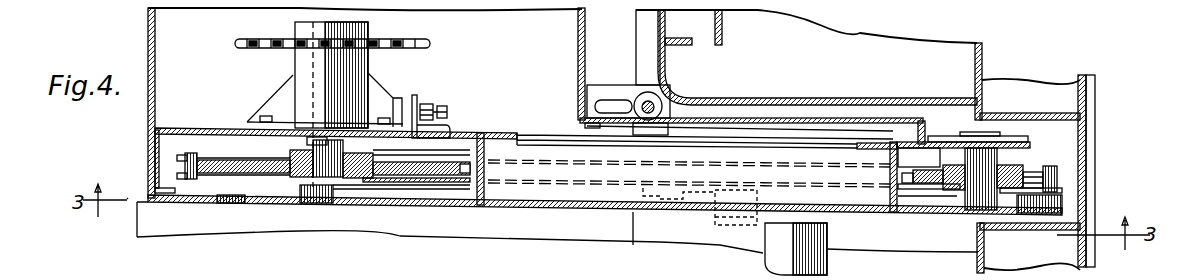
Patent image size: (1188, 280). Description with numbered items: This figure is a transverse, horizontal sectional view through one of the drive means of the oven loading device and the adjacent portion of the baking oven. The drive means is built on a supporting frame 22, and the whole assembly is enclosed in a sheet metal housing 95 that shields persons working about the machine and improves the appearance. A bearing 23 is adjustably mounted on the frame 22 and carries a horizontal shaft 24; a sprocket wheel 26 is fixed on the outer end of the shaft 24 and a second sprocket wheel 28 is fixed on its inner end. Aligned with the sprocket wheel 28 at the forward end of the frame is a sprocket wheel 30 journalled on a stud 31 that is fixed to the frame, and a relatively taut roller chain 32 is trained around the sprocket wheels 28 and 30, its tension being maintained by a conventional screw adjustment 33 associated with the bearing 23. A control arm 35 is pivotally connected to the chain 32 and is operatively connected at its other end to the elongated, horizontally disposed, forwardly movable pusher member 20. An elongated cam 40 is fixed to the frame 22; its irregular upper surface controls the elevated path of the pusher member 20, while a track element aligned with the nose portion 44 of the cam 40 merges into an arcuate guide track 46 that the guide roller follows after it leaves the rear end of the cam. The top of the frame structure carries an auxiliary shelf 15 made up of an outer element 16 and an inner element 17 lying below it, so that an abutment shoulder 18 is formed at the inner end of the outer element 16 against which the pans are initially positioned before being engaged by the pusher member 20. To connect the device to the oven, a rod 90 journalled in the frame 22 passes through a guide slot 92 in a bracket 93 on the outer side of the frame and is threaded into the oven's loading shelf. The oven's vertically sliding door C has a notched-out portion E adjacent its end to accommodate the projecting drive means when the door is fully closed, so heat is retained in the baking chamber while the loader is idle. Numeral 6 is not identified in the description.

The frame 6 is at (848, 264).
The auxiliary shelf 15 is at (389, 223).
The outer element 16 is at (447, 227).
The inner element 17 is at (525, 227).
The abutment shoulder 18 is at (473, 209).
The pusher member 20 is at (848, 232).
The supporting frame 22 is at (462, 134).
The bearing 23 is at (383, 95).
The horizontal shaft 24 is at (313, 72).
The sprocket wheel 26 is at (420, 47).
The sprocket wheel 28 is at (273, 163).
The sprocket wheel 30 is at (1026, 174).
The stud 31 is at (967, 155).
The roller chain 32 is at (181, 155).
The screw adjustment 33 is at (420, 105).
The control arm 35 is at (758, 222).
The cam 40 is at (573, 210).
The nose portion 44 is at (1063, 206).
The arcuate guide track 46 is at (287, 200).
The rod 90 is at (655, 101).
The guide slot 92 is at (607, 90).
The bracket 93 is at (618, 96).
The sheet metal housing 95 is at (148, 106).
The notched-out portion E is at (987, 228).
The vertically sliding door C is at (978, 263).